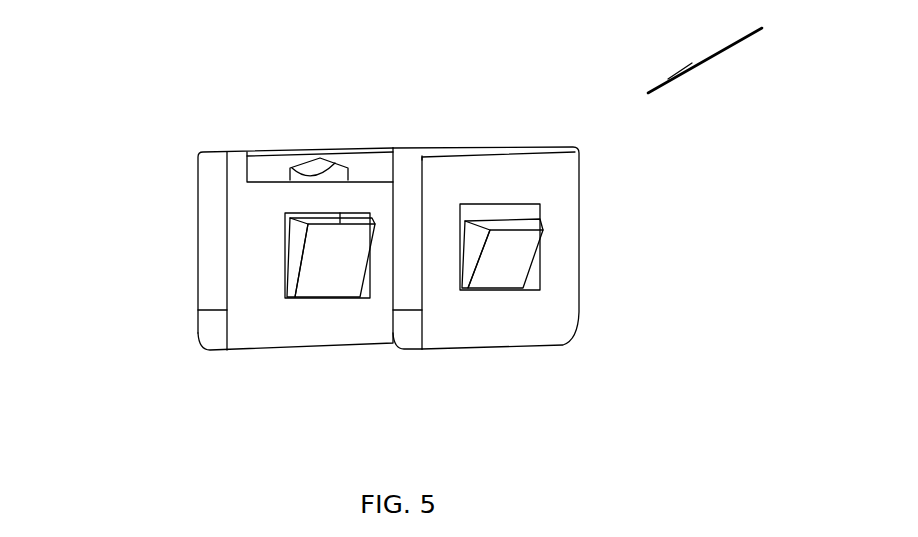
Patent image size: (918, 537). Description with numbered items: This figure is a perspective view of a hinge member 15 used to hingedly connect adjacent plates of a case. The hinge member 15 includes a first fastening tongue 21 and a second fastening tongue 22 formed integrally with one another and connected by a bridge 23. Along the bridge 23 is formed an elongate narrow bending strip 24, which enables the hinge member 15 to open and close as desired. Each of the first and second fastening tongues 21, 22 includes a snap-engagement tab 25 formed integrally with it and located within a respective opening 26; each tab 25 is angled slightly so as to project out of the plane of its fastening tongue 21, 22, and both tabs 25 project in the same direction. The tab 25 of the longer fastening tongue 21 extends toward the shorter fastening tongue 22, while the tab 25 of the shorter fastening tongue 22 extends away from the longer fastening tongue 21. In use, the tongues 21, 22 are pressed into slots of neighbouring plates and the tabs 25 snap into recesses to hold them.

The hinge member 15 is at (715, 47).
The first fastening tongue 21 is at (208, 183).
The second fastening tongue 22 is at (547, 330).
The bridge 23 is at (385, 150).
The bending strip 24 is at (293, 167).
The snap-engagement tab 25 is at (525, 242).
The opening 26 is at (302, 222).